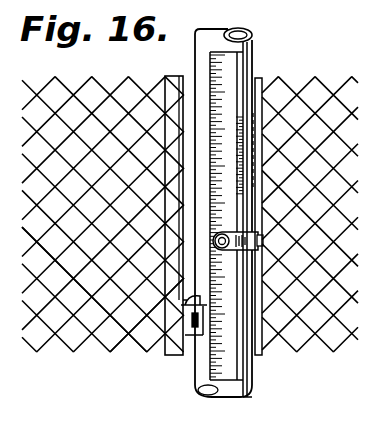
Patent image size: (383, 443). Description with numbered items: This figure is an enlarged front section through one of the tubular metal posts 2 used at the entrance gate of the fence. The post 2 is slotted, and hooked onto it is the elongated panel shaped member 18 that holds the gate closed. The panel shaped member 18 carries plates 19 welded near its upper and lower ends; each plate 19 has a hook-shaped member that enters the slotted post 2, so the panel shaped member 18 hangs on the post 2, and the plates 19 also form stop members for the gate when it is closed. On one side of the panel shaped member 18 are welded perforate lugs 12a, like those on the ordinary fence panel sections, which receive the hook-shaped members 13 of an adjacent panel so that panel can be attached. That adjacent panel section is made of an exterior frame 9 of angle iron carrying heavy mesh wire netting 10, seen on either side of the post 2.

The tubular metal post 2 is at (255, 42).
The exterior frame 9 is at (157, 353).
The heavy mesh wire netting 10 is at (83, 348).
The perforate lug 12a is at (187, 360).
The hook-shaped member 13 is at (133, 347).
The panel shaped member 18 is at (252, 372).
The plate 19 is at (277, 103).